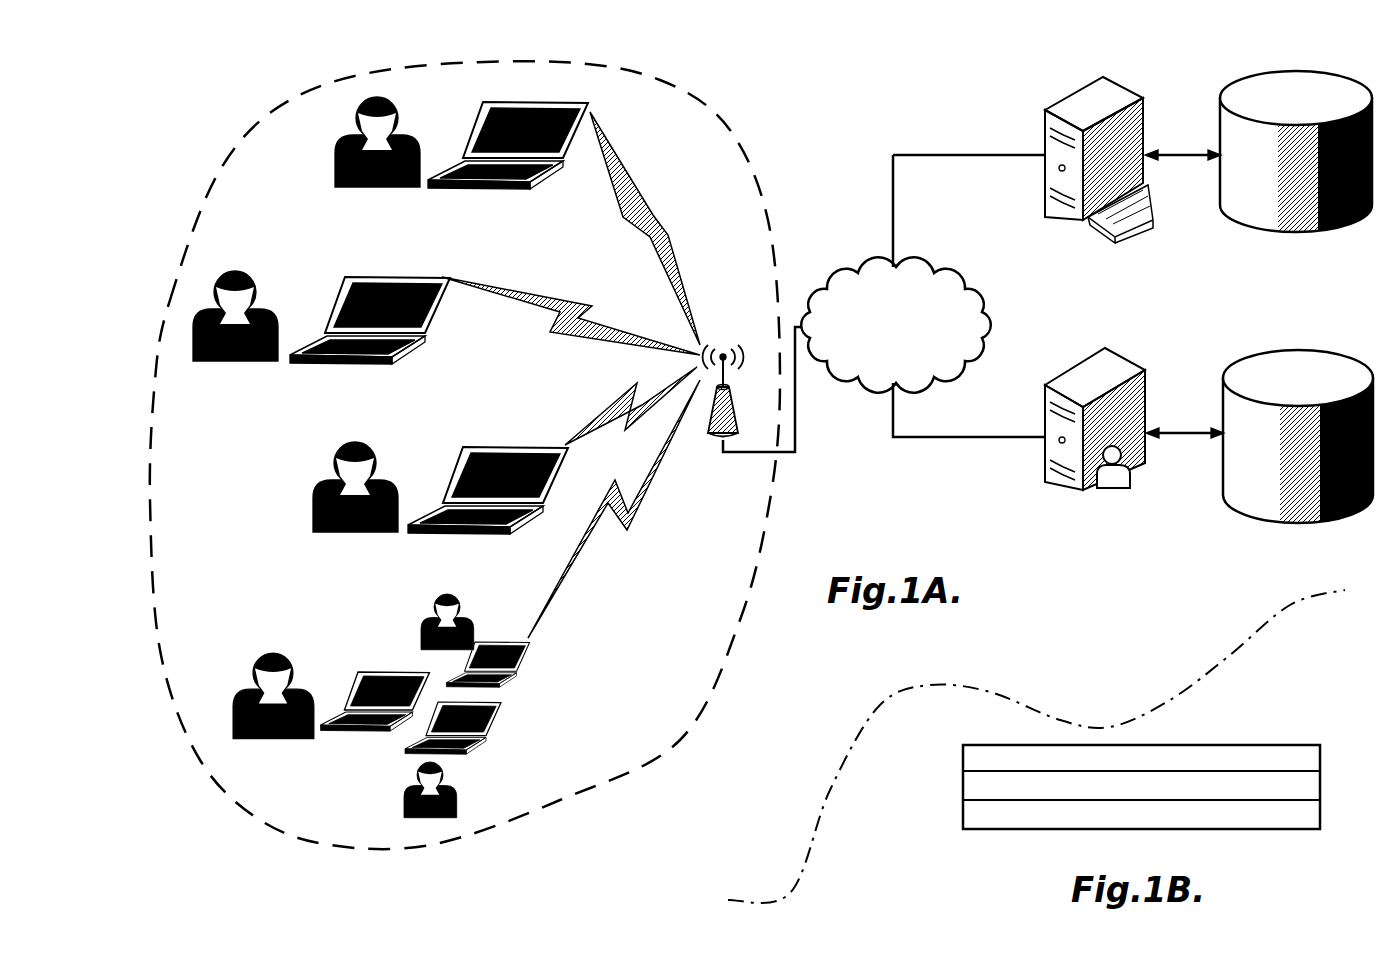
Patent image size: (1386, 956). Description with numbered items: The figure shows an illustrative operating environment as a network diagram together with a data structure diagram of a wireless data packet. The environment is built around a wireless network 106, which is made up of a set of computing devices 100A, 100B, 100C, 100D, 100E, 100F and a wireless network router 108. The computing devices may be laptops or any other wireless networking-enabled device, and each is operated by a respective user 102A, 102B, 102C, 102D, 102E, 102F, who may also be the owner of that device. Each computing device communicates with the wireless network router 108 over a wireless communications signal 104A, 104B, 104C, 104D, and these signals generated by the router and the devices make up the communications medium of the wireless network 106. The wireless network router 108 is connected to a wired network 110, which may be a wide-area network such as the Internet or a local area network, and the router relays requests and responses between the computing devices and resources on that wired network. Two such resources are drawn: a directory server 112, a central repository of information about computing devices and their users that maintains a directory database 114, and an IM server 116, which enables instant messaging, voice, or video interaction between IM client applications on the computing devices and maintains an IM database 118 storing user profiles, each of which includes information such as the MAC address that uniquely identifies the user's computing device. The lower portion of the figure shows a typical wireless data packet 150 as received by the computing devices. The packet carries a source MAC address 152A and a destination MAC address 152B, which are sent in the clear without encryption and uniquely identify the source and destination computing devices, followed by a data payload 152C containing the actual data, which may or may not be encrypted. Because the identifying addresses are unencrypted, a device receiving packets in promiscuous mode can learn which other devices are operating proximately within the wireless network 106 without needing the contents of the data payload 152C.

In FIG. 1A, the computing device 100A is at (500, 190).
In FIG. 1A, the computing device 100B is at (382, 363).
In FIG. 1A, the computing device 100C is at (503, 535).
In FIG. 1A, the computing device 100D is at (520, 660).
In FIG. 1A, the computing device 100E is at (358, 673).
In FIG. 1A, the computing device 100F is at (498, 720).
In FIG. 1A, the user 102A is at (335, 178).
In FIG. 1A, the user 102B is at (240, 364).
In FIG. 1A, the user 102C is at (315, 515).
In FIG. 1A, the user 102D is at (422, 630).
In FIG. 1A, the user 102E is at (283, 735).
In FIG. 1A, the user 102F is at (458, 800).
In FIG. 1A, the wireless communications signal 104A is at (660, 222).
In FIG. 1A, the wireless communications signal 104B is at (614, 284).
In FIG. 1A, the wireless communications signal 104C is at (632, 394).
In FIG. 1A, the wireless communications signal 104D is at (630, 516).
In FIG. 1A, the wireless network 106 is at (720, 110).
In FIG. 1A, the wireless network router 108 is at (712, 438).
In FIG. 1A, the wired network 110 is at (943, 380).
In FIG. 1A, the directory server 112 is at (1097, 85).
In FIG. 1A, the directory database 114 is at (1283, 80).
In FIG. 1A, the IM server 116 is at (1082, 376).
In FIG. 1A, the IM database 118 is at (1270, 508).
In FIG. 1B, the wireless data packet 150 is at (1255, 733).
In FIG. 1B, the source MAC address 152A is at (963, 757).
In FIG. 1B, the destination MAC address 152B is at (963, 786).
In FIG. 1B, the data payload 152C is at (963, 815).